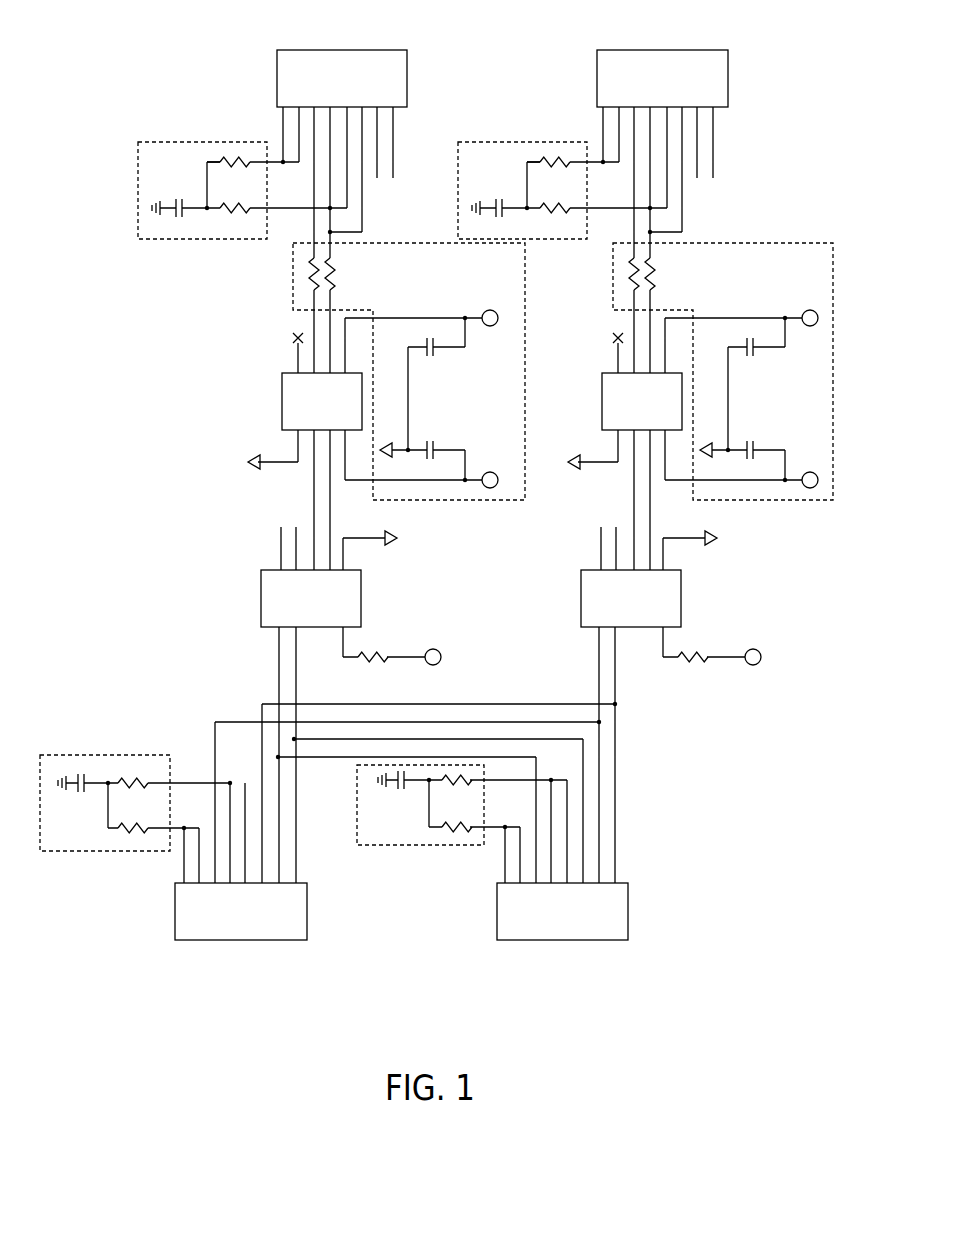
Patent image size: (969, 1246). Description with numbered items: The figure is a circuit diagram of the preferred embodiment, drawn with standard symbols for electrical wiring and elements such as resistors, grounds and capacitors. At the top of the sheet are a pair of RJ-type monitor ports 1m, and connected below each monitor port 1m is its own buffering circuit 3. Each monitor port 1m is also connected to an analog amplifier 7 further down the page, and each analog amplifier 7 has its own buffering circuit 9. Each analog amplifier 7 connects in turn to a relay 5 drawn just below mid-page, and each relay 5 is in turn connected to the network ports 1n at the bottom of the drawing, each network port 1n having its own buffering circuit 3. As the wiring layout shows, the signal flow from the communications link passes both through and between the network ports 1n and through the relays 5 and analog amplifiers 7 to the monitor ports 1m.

The monitor port 1m is at (320, 50).
The network port 1n is at (193, 941).
The buffering circuit 3 is at (185, 138).
The relay 5 is at (258, 596).
The analog amplifier 7 is at (598, 400).
The buffering circuit 9 is at (548, 297).